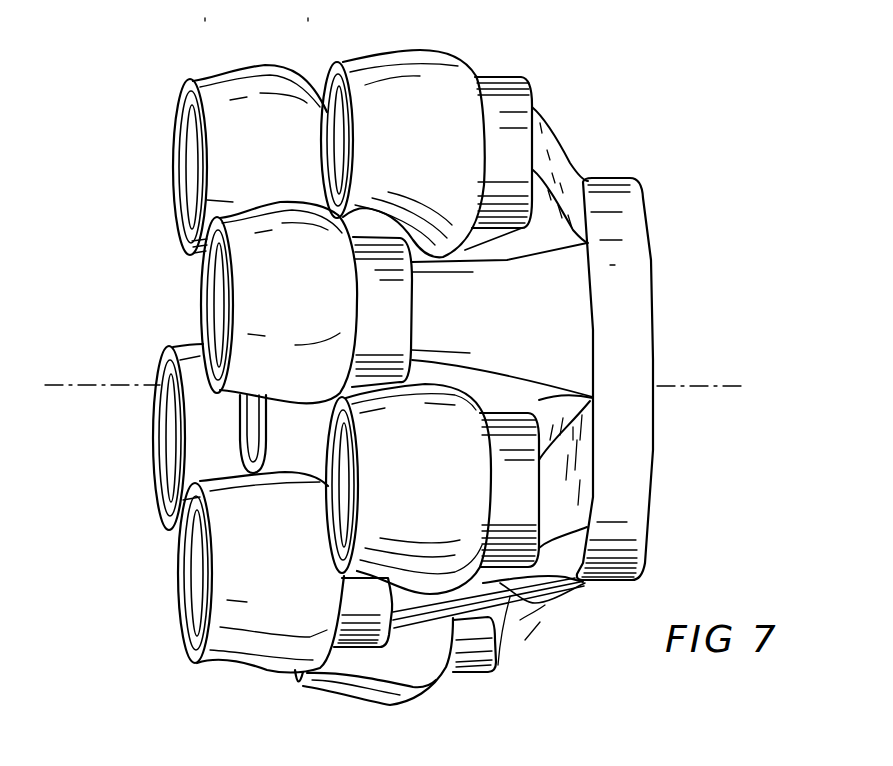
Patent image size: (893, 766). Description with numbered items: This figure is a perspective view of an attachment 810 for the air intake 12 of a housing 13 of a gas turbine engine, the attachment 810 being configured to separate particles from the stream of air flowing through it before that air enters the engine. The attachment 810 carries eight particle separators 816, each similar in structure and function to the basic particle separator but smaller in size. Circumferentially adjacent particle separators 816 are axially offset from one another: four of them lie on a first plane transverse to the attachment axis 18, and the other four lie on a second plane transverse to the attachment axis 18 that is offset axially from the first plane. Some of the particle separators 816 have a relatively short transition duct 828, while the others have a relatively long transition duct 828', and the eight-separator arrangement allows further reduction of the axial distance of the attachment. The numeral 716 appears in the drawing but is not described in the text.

The attachment 810 is at (150, 115).
The tube 716 is at (258, 10).
The particle separator 816 is at (228, 72).
The transition duct 828 is at (609, 386).
The transition duct 828' is at (505, 457).
The air intake 12 is at (641, 215).
The housing 13 is at (629, 275).
The attachment axis 18 is at (61, 381).